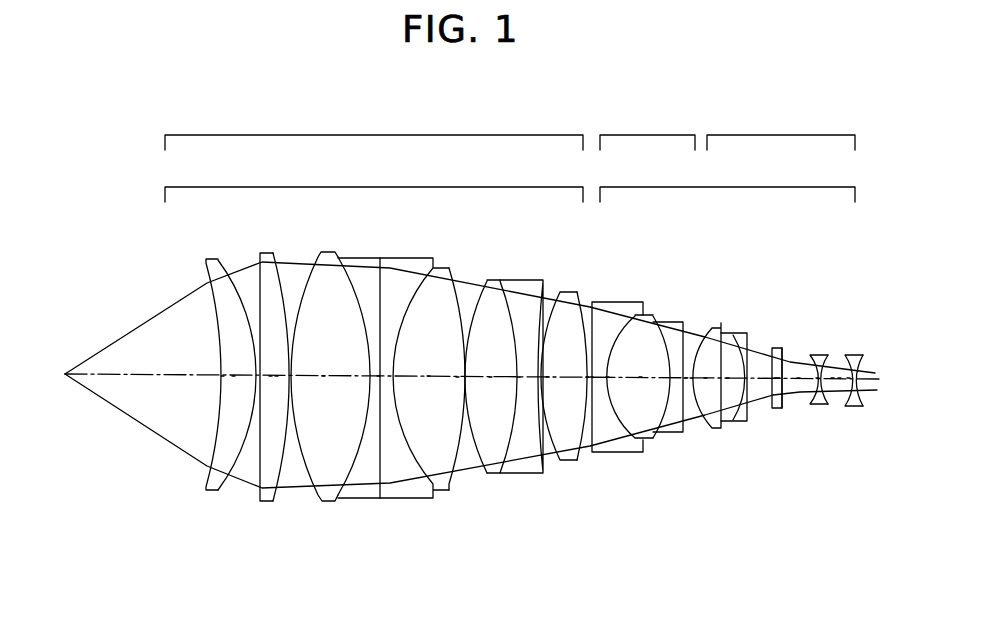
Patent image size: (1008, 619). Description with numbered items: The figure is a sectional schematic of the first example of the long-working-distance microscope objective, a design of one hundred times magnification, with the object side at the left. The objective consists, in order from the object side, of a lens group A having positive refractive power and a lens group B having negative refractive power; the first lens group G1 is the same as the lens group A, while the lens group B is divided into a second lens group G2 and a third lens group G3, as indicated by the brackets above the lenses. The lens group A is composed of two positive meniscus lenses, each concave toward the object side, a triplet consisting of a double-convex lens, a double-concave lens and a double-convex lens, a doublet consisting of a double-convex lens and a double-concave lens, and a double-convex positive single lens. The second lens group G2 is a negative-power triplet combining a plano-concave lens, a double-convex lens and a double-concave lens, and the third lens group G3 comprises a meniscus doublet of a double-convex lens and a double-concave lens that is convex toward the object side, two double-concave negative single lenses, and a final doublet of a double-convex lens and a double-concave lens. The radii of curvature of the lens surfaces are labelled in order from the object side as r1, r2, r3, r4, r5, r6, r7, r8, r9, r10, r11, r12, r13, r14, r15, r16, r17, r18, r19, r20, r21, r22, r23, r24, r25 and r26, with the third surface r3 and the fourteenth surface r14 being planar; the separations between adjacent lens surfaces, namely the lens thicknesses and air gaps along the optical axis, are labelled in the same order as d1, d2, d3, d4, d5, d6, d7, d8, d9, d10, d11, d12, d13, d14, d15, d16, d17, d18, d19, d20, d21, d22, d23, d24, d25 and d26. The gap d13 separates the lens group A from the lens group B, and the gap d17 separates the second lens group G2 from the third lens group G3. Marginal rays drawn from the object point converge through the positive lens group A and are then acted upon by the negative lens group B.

The first lens group G1 is at (374, 125).
The second lens group G2 is at (647, 125).
The third lens group G3 is at (781, 125).
The lens group A is at (374, 178).
The lens group B is at (727, 178).
The radius of curvature of first lens surface r1 is at (204, 285).
The radius of curvature of second lens surface r2 is at (221, 262).
The radius of curvature of third lens surface r3 is at (259, 255).
The radius of curvature of fourth lens surface r4 is at (274, 256).
The radius of curvature of fifth lens surface r5 is at (320, 257).
The radius of curvature of sixth lens surface r6 is at (337, 257).
The radius of curvature of seventh lens surface r7 is at (432, 268).
The radius of curvature of eighth lens surface r8 is at (449, 268).
The radius of curvature of ninth lens surface r9 is at (487, 281).
The radius of curvature of tenth lens surface r10 is at (500, 281).
The radius of curvature of eleventh lens surface r11 is at (543, 281).
The radius of curvature of twelfth lens surface r12 is at (561, 292).
The radius of curvature of thirteenth lens surface r13 is at (578, 292).
The radius of curvature of fourteenth lens surface r14 is at (596, 302).
The radius of curvature of fifteenth lens surface r15 is at (640, 315).
The radius of curvature of sixteenth lens surface r16 is at (656, 317).
The radius of curvature of seventeenth lens surface r17 is at (684, 322).
The radius of curvature of eighteenth lens surface r18 is at (706, 328).
The radius of curvature of nineteenth lens surface r19 is at (734, 334).
The radius of curvature of twentieth lens surface r20 is at (748, 333).
The radius of curvature of twenty-first lens surface r21 is at (773, 348).
The radius of curvature of twenty-second lens surface r22 is at (783, 349).
The radius of curvature of twenty-third lens surface r23 is at (810, 354).
The radius of curvature of twenty-fourth lens surface r24 is at (830, 354).
The radius of curvature of twenty-fifth lens surface r25 is at (845, 354).
The radius of curvature of twenty-sixth lens surface r26 is at (866, 354).
The first lens surface separation d1 is at (222, 377).
The second lens surface separation d2 is at (233, 377).
The third lens surface separation d3 is at (270, 377).
The fourth lens surface separation d4 is at (276, 377).
The fifth lens surface separation d5 is at (323, 377).
The sixth lens surface separation d6 is at (378, 377).
The seventh lens surface separation d7 is at (428, 377).
The eighth lens surface separation d8 is at (457, 379).
The ninth lens surface separation d9 is at (490, 378).
The tenth lens surface separation d10 is at (518, 378).
The eleventh lens surface separation d11 is at (547, 378).
The twelfth lens surface separation d12 is at (587, 378).
The thirteenth lens surface separation d13 is at (591, 378).
The fourteenth lens surface separation d14 is at (607, 378).
The fifteenth lens surface separation d15 is at (640, 378).
The sixteenth lens surface separation d16 is at (685, 378).
The seventeenth lens surface separation d17 is at (691, 378).
The eighteenth lens surface separation d18 is at (705, 378).
The nineteenth lens surface separation d19 is at (727, 378).
The twentieth lens surface separation d20 is at (775, 378).
The twenty-first lens surface separation d21 is at (778, 378).
The twenty-second lens surface separation d22 is at (798, 378).
The twenty-third lens surface separation d23 is at (817, 378).
The twenty-fourth lens surface separation d24 is at (832, 378).
The twenty-fifth lens surface separation d25 is at (839, 378).
The twenty-sixth lens surface separation d26 is at (848, 379).